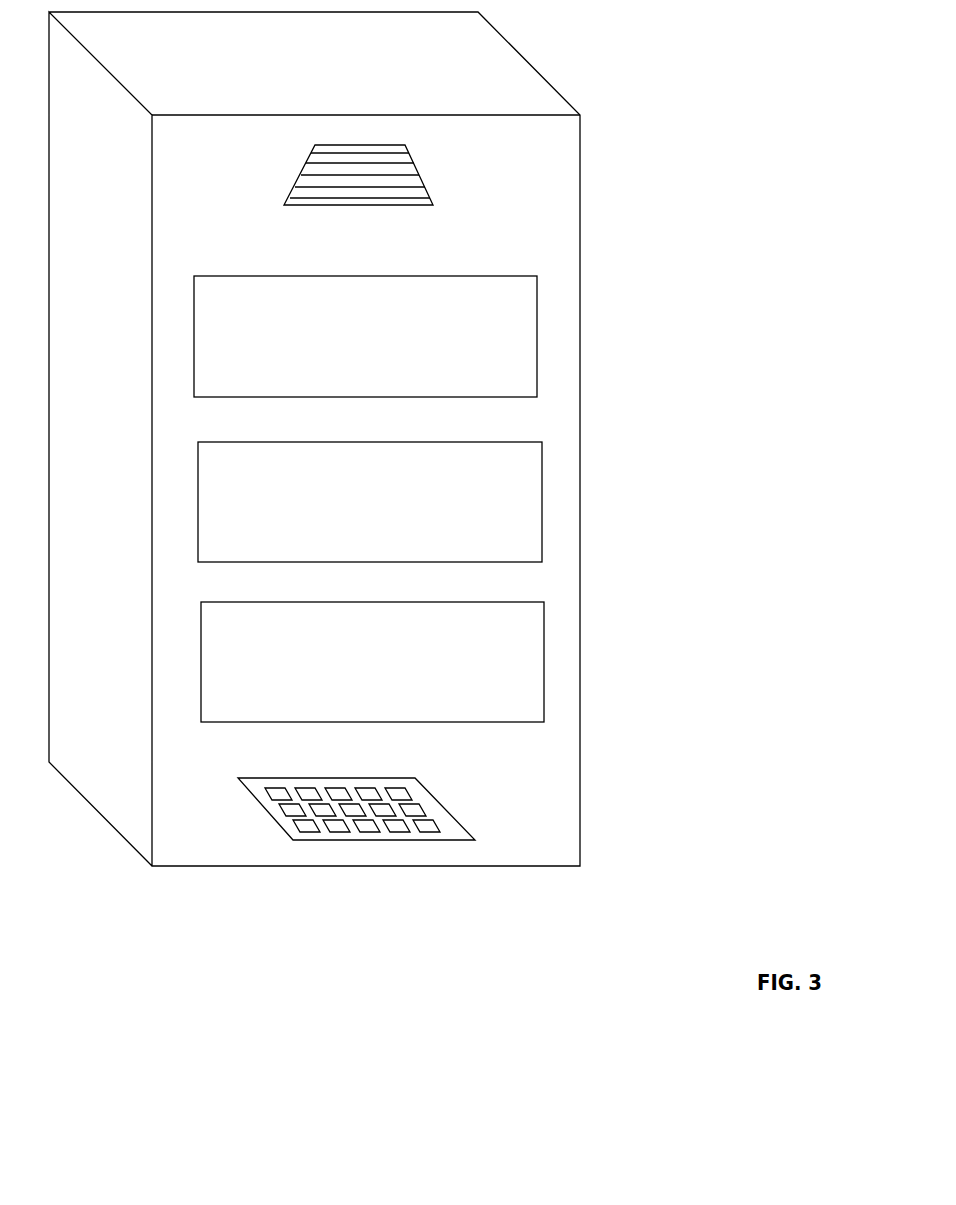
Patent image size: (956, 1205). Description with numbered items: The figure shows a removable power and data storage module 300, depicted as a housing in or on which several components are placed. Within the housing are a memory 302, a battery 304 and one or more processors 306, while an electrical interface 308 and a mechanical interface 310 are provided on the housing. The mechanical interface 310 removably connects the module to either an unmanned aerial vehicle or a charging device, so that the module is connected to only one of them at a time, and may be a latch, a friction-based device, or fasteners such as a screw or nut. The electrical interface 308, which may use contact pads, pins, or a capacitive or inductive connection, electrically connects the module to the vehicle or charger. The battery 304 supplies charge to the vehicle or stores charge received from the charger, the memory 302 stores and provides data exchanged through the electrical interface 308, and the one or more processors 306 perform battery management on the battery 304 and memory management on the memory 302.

The power and data storage module 300 is at (181, 992).
The memory 302 is at (365, 336).
The battery 304 is at (370, 502).
The one or more processors 306 is at (372, 662).
The electrical interface 308 is at (378, 852).
The mechanical interface 310 is at (402, 163).